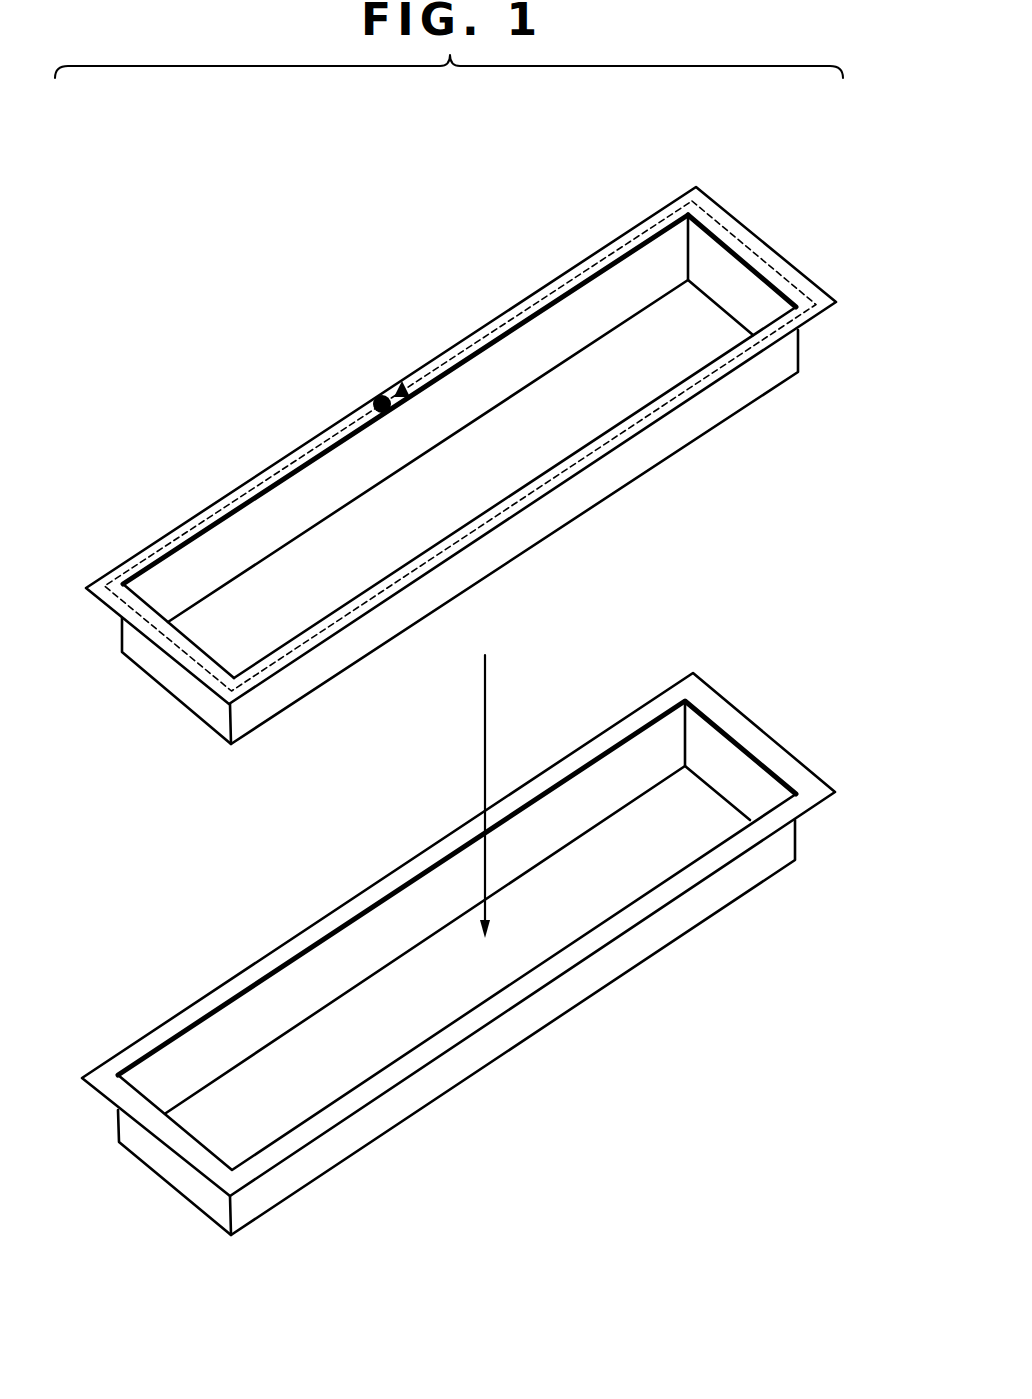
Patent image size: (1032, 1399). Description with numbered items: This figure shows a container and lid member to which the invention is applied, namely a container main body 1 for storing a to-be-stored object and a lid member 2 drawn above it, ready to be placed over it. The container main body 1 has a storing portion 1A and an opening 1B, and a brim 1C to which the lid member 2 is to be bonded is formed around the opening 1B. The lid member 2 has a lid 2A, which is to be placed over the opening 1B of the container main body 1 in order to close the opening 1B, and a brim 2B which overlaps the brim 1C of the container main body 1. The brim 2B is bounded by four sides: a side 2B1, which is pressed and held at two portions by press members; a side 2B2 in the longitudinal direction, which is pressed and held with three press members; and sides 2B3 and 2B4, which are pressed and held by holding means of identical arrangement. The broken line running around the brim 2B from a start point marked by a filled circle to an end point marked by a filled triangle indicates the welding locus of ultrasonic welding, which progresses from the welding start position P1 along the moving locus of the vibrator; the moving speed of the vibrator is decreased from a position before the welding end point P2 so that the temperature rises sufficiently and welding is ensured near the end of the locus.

The container main body 1 is at (683, 660).
The storing portion 1A is at (752, 873).
The opening 1B is at (212, 1138).
The brim 1C is at (578, 953).
The lid member 2 is at (683, 165).
The lid 2A is at (753, 392).
The brim 2B is at (794, 280).
The side of brim 2B1 is at (200, 665).
The side of brim 2B2 is at (582, 467).
The side of brim 2B3 is at (732, 213).
The side of brim 2B4 is at (565, 272).
The welding start position P1 is at (373, 400).
The welding end point P2 is at (398, 385).